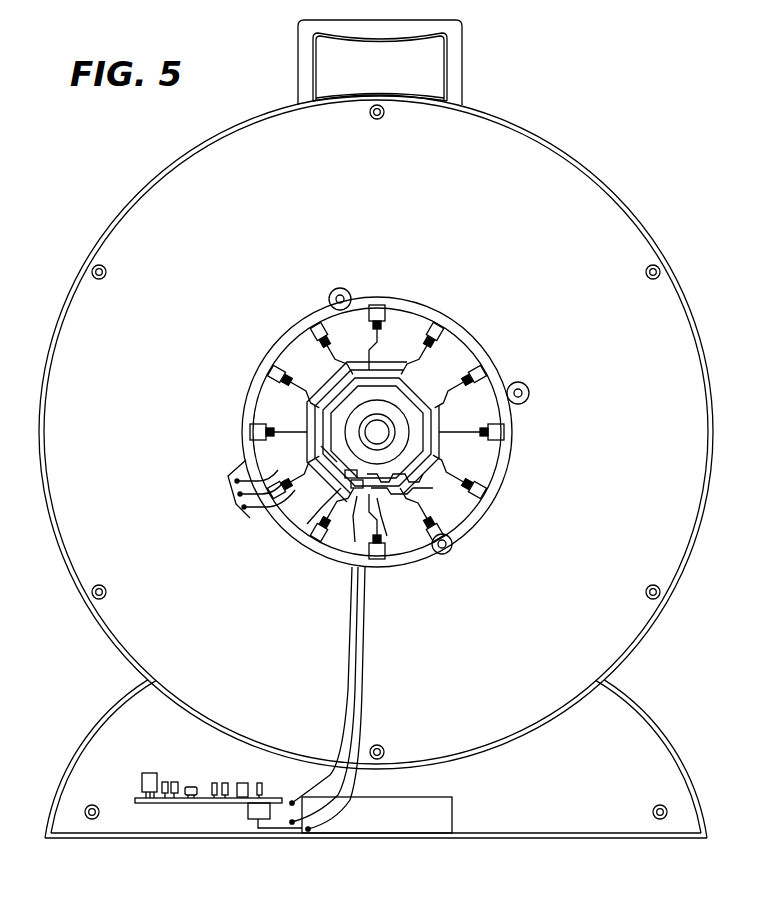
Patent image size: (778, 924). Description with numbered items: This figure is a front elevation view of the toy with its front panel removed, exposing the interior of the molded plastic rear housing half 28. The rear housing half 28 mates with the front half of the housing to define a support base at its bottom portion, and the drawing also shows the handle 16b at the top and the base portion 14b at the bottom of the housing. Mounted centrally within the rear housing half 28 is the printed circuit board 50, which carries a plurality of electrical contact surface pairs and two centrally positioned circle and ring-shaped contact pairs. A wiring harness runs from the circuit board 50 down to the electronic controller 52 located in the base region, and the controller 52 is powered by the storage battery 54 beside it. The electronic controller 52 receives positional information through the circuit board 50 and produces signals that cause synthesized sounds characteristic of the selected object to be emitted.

The rear housing half 28 is at (580, 163).
The handle 16b is at (463, 55).
The base 14b is at (641, 703).
The printed circuit board 50 is at (481, 327).
The electronic controller 52 is at (208, 803).
The storage battery 54 is at (377, 817).